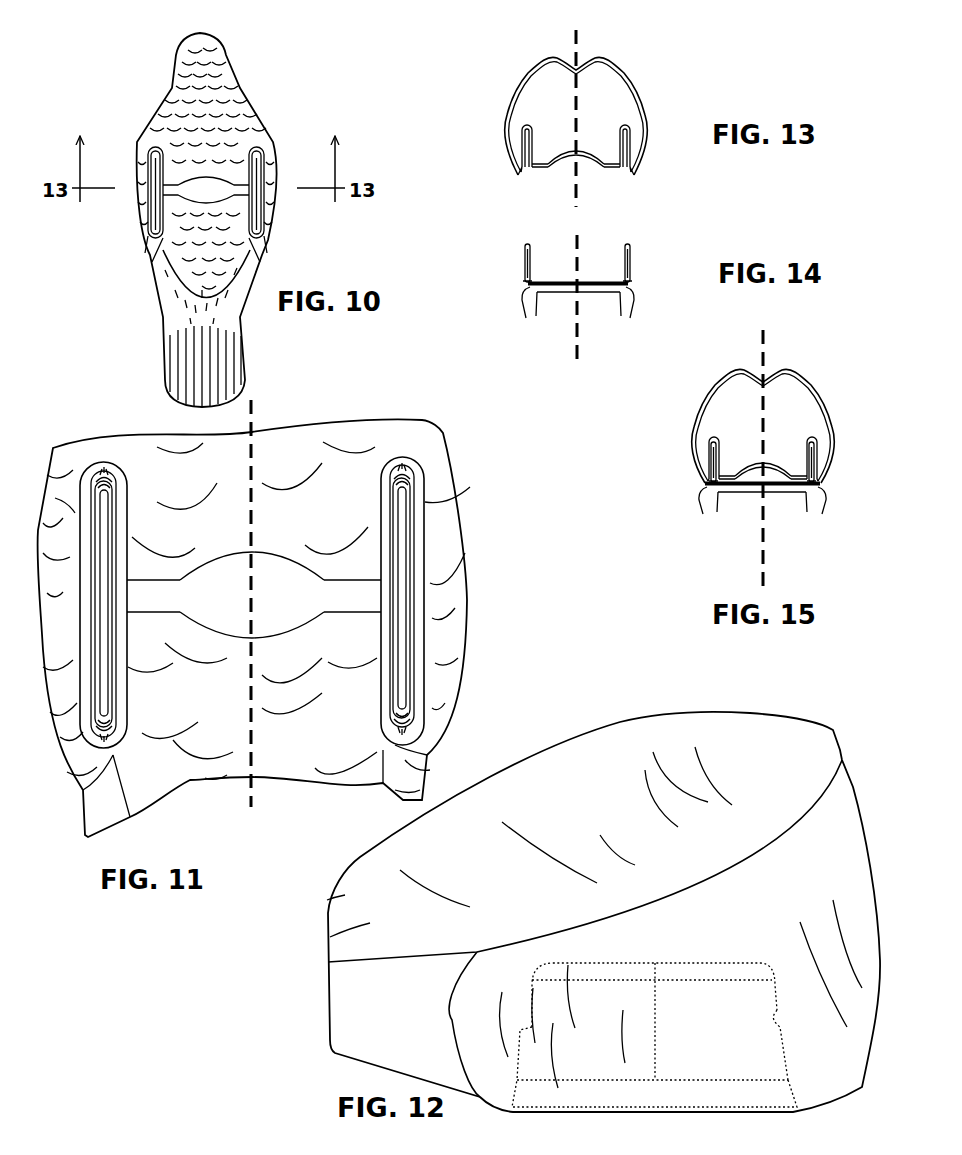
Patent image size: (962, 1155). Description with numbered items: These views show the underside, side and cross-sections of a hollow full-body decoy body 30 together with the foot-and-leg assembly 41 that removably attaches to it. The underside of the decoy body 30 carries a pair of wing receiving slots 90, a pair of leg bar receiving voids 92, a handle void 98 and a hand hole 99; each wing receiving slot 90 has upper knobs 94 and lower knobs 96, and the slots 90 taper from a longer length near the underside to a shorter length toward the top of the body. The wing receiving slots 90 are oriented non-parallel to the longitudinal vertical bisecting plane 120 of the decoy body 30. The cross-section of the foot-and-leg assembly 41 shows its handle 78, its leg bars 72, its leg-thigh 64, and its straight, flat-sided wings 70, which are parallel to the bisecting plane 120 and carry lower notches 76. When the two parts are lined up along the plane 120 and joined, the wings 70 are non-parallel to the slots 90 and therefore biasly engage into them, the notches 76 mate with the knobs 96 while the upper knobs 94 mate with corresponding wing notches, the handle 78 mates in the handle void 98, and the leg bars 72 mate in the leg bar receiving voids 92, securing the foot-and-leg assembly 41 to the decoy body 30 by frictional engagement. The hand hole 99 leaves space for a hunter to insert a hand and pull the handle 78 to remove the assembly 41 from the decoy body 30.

In FIG. 10, the decoy body 30 is at (266, 104).
In FIG. 11, the decoy body 30 is at (468, 434).
In FIG. 13, the decoy body 30 is at (625, 53).
In FIG. 15, the decoy body 30 is at (818, 379).
In FIG. 12, the decoy body 30 is at (817, 706).
In FIG. 14, the foot-and-leg assembly 41 is at (573, 292).
In FIG. 15, the foot-and-leg assembly 41 is at (756, 490).
In FIG. 14, the leg-thigh 64 is at (634, 303).
In FIG. 15, the leg-thigh 64 is at (815, 503).
In FIG. 14, the wing 70 is at (632, 256).
In FIG. 15, the wing 70 is at (812, 459).
In FIG. 14, the leg bar 72 is at (631, 288).
In FIG. 15, the leg bar 72 is at (820, 488).
In FIG. 14, the lower notch 76 is at (631, 281).
In FIG. 15, the lower notch 76 is at (815, 476).
In FIG. 14, the handle 78 is at (598, 296).
In FIG. 15, the handle 78 is at (787, 493).
In FIG. 10, the wing receiving slot 90 is at (257, 204).
In FIG. 11, the wing receiving slot 90 is at (402, 528).
In FIG. 13, the wing receiving slot 90 is at (627, 147).
In FIG. 15, the wing receiving slot 90 is at (812, 446).
In FIG. 12, the wing receiving slot 90 is at (698, 1043).
In FIG. 10, the leg bar receiving void 92 is at (260, 180).
In FIG. 11, the leg bar receiving void 92 is at (417, 575).
In FIG. 13, the leg bar receiving void 92 is at (636, 168).
In FIG. 15, the leg bar receiving void 92 is at (822, 486).
In FIG. 12, the leg bar receiving void 92 is at (772, 1097).
In FIG. 11, the upper knob 94 is at (97, 480).
In FIG. 12, the upper knob 94 is at (780, 1018).
In FIG. 11, the lower knob 96 is at (103, 470).
In FIG. 12, the lower knob 96 is at (790, 1072).
In FIG. 10, the handle void 98 is at (206, 190).
In FIG. 11, the handle void 98 is at (158, 593).
In FIG. 13, the handle void 98 is at (545, 170).
In FIG. 15, the handle void 98 is at (800, 488).
In FIG. 11, the hand hole 99 is at (265, 597).
In FIG. 13, the hand hole 99 is at (582, 163).
In FIG. 15, the hand hole 99 is at (750, 478).
In FIG. 11, the longitudinal vertical bisecting plane 120 is at (255, 805).
In FIG. 13, the longitudinal vertical bisecting plane 120 is at (574, 37).
In FIG. 14, the longitudinal vertical bisecting plane 120 is at (575, 343).
In FIG. 15, the longitudinal vertical bisecting plane 120 is at (762, 575).